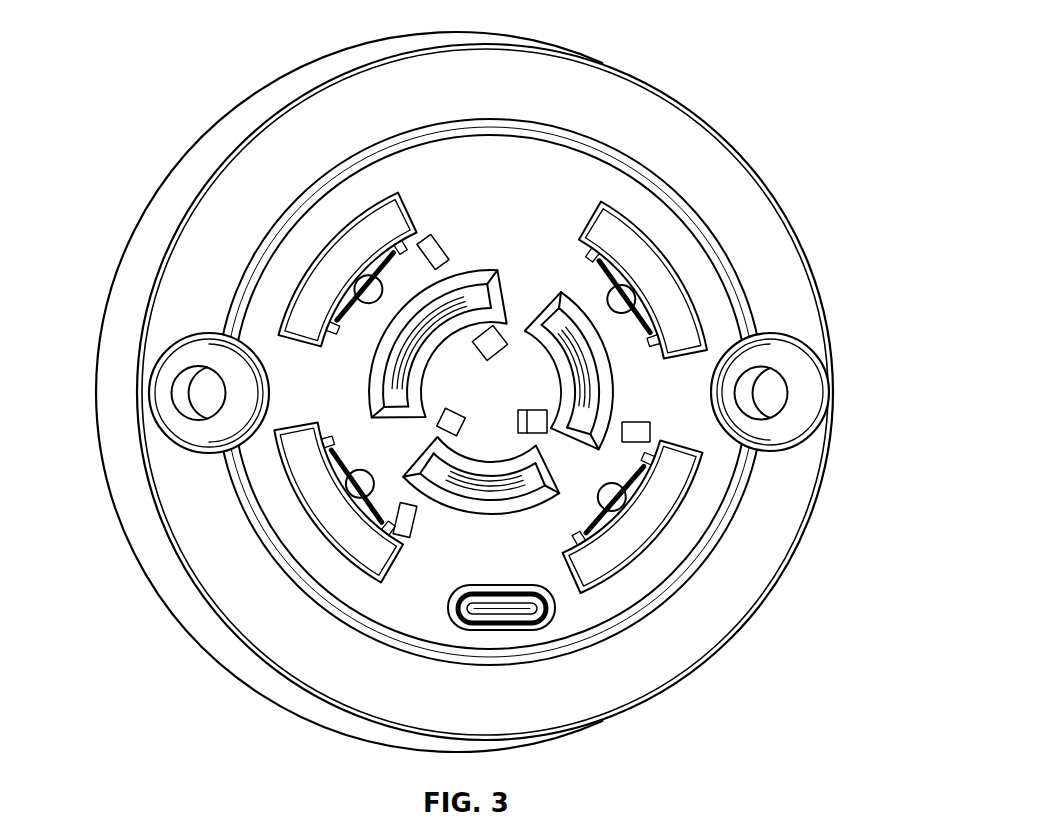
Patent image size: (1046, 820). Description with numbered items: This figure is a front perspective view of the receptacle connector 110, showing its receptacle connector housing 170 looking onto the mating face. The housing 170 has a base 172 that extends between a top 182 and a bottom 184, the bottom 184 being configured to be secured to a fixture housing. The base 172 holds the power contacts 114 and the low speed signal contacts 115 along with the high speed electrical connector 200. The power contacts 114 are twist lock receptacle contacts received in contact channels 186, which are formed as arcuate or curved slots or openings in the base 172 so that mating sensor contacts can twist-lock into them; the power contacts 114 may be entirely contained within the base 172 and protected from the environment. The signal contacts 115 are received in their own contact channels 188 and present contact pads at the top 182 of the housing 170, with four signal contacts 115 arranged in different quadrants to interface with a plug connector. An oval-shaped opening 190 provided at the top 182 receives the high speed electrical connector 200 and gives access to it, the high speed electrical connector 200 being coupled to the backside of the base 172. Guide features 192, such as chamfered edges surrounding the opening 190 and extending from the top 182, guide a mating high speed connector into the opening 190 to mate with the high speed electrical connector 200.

The receptacle connector 110 is at (500, 392).
The power contacts 114 is at (663, 290).
The signal contacts 115 is at (578, 393).
The receptacle connector housing 170 is at (790, 525).
The base 172 is at (130, 535).
The top 182 is at (235, 592).
The bottom 184 is at (172, 607).
The contact channels 186 is at (597, 410).
The contact channels 188 is at (615, 497).
The opening 190 is at (545, 637).
The guide features 192 is at (553, 607).
The high speed electrical connector 200 is at (487, 637).